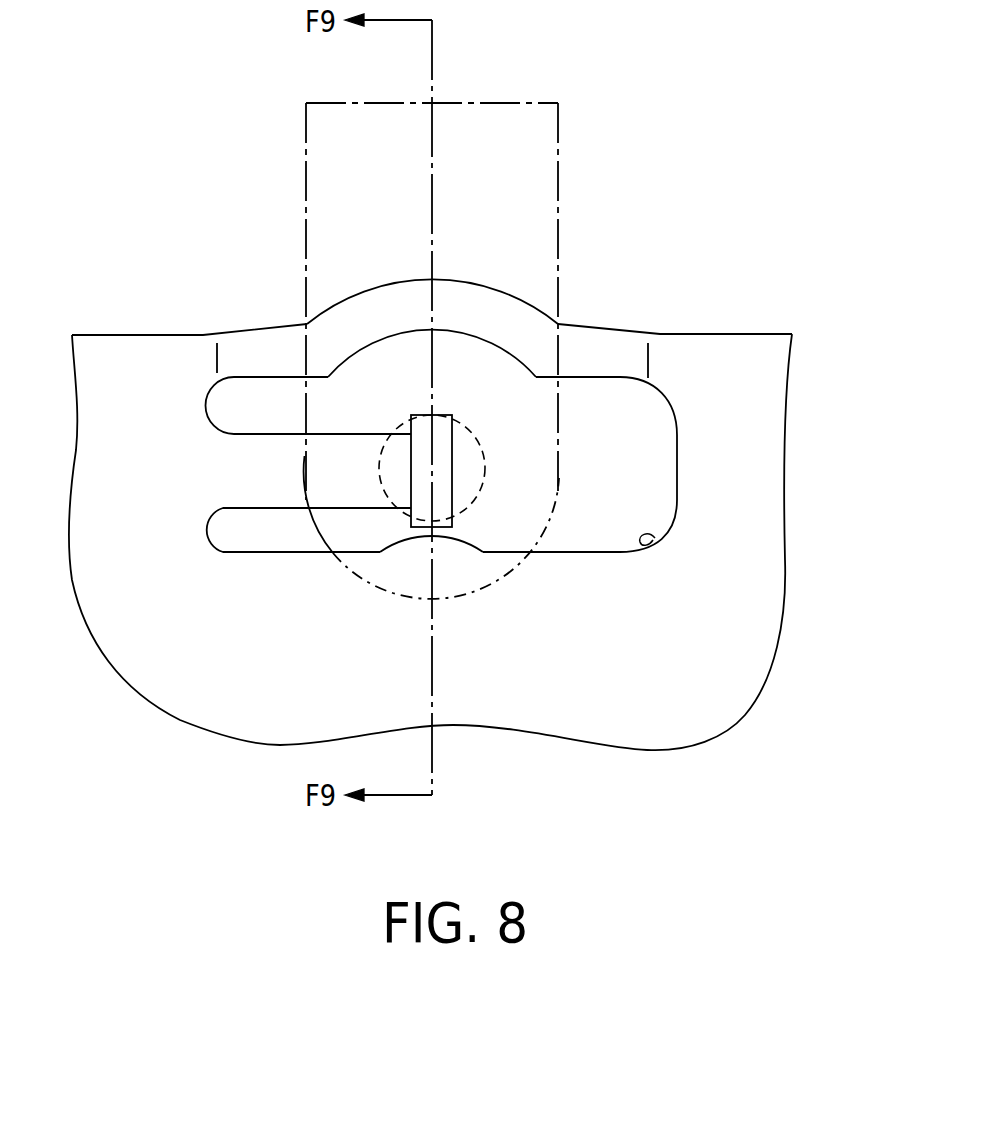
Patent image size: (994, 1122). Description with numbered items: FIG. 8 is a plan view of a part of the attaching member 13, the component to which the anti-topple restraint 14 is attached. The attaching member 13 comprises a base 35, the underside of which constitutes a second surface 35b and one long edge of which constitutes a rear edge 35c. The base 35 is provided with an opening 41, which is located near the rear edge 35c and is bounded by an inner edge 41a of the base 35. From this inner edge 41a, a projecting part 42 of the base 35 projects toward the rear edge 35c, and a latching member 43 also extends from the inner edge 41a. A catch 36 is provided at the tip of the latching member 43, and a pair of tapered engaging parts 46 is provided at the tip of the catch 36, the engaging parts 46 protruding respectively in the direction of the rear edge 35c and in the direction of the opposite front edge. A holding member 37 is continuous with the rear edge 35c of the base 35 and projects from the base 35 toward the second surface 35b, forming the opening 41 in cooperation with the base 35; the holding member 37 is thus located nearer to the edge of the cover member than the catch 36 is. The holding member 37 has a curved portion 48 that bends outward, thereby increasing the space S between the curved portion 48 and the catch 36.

The attaching member 13 is at (128, 297).
The anti-topple restraint 14 is at (527, 103).
The base 35 is at (562, 716).
The second surface 35b is at (757, 600).
The rear edge 35c is at (725, 332).
The catch 36 is at (443, 468).
The holding member 37 is at (588, 335).
The opening 41 is at (677, 465).
The inner edge 41a is at (655, 538).
The projecting part 42 is at (450, 553).
The latching member 43 is at (258, 478).
The engaging part 46 is at (441, 413).
The curved portion 48 is at (487, 300).
The space S is at (416, 391).